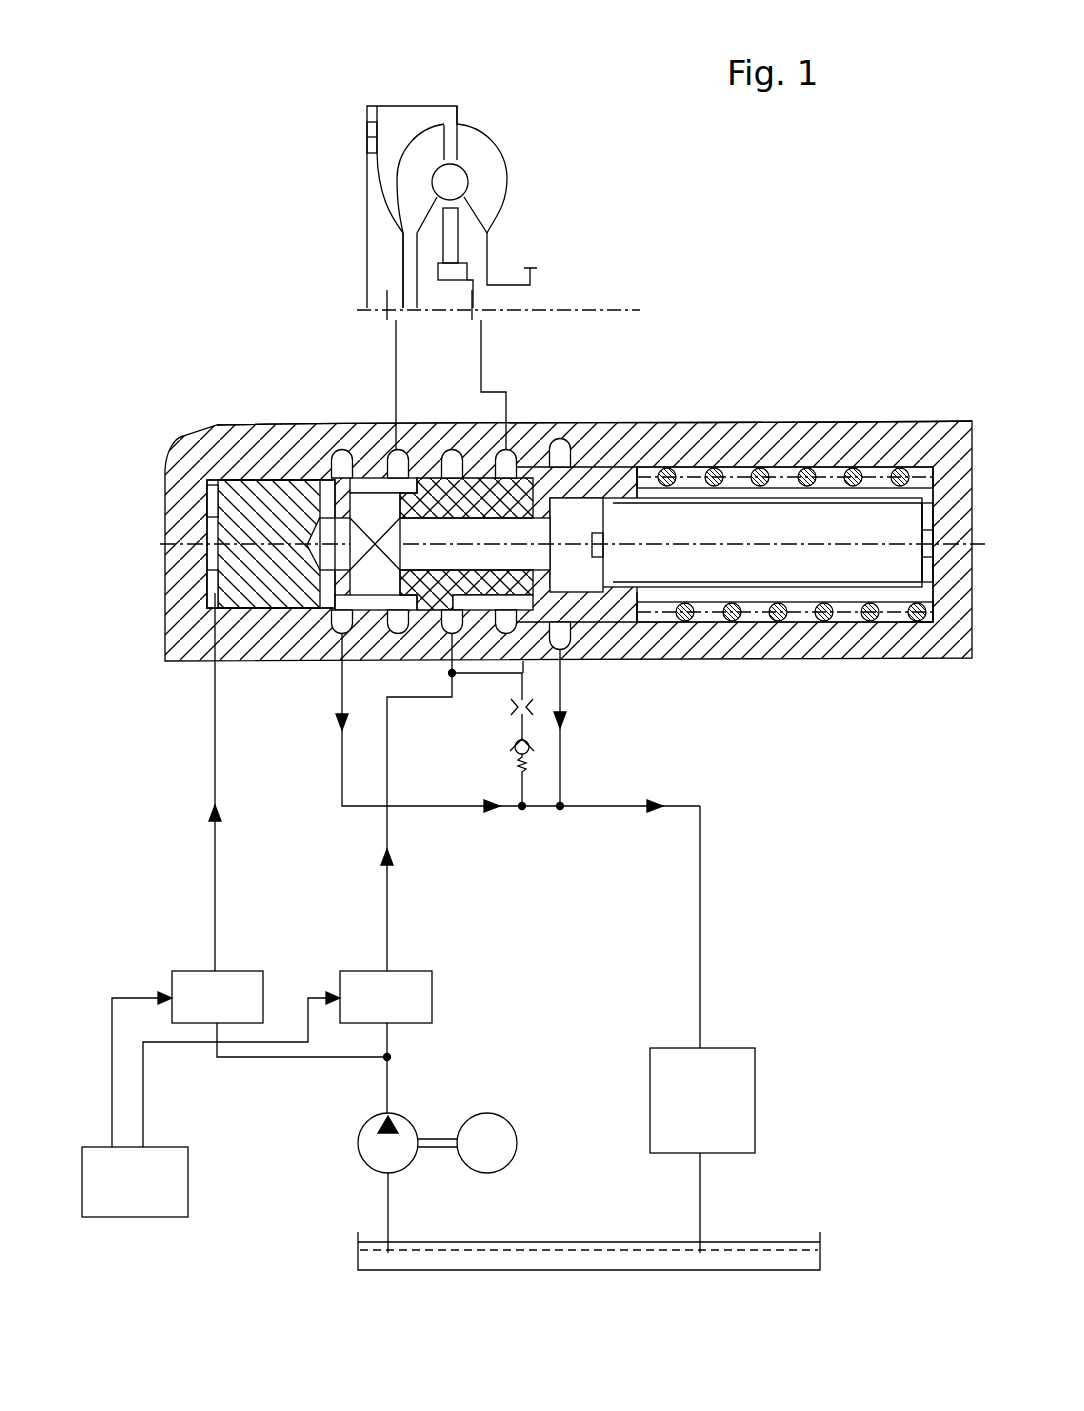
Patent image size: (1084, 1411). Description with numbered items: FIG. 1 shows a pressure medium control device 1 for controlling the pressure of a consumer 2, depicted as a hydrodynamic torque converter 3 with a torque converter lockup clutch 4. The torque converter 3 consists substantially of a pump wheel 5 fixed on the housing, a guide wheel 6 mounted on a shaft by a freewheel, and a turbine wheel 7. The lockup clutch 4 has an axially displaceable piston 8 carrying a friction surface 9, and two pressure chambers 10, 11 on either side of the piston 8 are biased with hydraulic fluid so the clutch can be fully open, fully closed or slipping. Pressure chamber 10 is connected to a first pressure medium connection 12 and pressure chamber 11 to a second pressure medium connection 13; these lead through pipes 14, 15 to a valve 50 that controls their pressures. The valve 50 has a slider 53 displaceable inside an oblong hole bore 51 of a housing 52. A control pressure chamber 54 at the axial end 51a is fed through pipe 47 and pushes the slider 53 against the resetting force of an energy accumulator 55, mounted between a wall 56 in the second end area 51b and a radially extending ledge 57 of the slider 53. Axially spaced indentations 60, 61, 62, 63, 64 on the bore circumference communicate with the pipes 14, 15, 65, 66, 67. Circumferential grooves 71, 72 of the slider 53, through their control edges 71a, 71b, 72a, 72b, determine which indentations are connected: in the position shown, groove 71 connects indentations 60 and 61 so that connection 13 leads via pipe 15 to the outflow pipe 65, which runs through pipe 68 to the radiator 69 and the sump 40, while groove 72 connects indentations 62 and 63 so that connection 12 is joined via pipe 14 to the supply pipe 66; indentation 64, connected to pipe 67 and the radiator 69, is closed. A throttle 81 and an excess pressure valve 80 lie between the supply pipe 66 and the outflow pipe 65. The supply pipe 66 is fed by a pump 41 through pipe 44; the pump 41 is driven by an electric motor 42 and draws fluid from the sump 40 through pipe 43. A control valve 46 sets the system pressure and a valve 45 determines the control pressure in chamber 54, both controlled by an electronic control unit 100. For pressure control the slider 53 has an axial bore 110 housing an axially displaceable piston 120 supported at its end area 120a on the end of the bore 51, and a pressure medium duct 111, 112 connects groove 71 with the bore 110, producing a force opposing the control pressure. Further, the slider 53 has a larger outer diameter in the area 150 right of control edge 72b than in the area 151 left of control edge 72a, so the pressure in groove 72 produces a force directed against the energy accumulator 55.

The pressure medium control device 1 is at (738, 238).
The consumer 2 is at (513, 118).
The hydrodynamic torque converter 3 is at (457, 90).
The torque converter lockup clutch 4 is at (362, 158).
The pump wheel 5 is at (495, 165).
The guide wheel 6 is at (458, 247).
The turbine wheel 7 is at (405, 185).
The piston 8 is at (383, 200).
The friction surface 9 is at (367, 138).
The pressure chamber 10 is at (392, 107).
The pressure chamber 11 is at (380, 257).
The first pressure medium connection 12 is at (487, 302).
The second pressure medium connection 13 is at (387, 298).
The pressure medium pipe 14 is at (482, 352).
The pressure medium pipe 15 is at (396, 338).
The sump 40 is at (475, 1270).
The pump 41 is at (360, 1147).
The electric motor 42 is at (517, 1143).
The pipe 43 is at (388, 1207).
The pipe 44 is at (388, 1087).
The valve 45 is at (203, 1010).
The control valve 46 is at (371, 1010).
The pipe 47 is at (215, 748).
The valve 50 is at (798, 415).
The oblong hole bore 51 is at (605, 467).
The axial end 51a is at (207, 497).
The second end area 51b is at (928, 427).
The housing 52 is at (743, 425).
The slider 53 is at (243, 497).
The control pressure chamber 54 is at (207, 580).
The energy accumulator 55 is at (797, 628).
The wall 56 is at (930, 655).
The ledge 57 is at (640, 472).
The indentation 60 is at (342, 640).
The indentation 61 is at (398, 640).
The indentation 62 is at (452, 640).
The indentation 63 is at (506, 640).
The indentation 64 is at (560, 447).
The outflow pipe 65 is at (342, 806).
The supply pipe 66 is at (387, 900).
The pipe 67 is at (562, 752).
The pipe 68 is at (700, 897).
The radiator 69 is at (688, 1120).
The circumferential groove 71 is at (392, 452).
The control edge 71a is at (342, 455).
The control edge 71b is at (448, 455).
The circumferential groove 72 is at (503, 455).
The control edge 72a is at (456, 598).
The control edge 72b is at (525, 661).
The excess pressure valve 80 is at (515, 752).
The throttle 81 is at (517, 708).
The control unit 100 is at (114, 1197).
The bore 110 is at (582, 508).
The pressure medium duct 111 is at (425, 552).
The pressure medium duct 112 is at (353, 520).
The piston 120 is at (744, 537).
The end area 120a is at (905, 520).
The area 150 is at (597, 605).
The area 151 is at (253, 587).